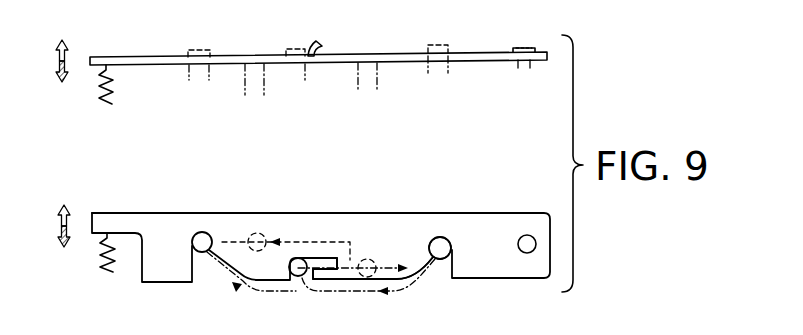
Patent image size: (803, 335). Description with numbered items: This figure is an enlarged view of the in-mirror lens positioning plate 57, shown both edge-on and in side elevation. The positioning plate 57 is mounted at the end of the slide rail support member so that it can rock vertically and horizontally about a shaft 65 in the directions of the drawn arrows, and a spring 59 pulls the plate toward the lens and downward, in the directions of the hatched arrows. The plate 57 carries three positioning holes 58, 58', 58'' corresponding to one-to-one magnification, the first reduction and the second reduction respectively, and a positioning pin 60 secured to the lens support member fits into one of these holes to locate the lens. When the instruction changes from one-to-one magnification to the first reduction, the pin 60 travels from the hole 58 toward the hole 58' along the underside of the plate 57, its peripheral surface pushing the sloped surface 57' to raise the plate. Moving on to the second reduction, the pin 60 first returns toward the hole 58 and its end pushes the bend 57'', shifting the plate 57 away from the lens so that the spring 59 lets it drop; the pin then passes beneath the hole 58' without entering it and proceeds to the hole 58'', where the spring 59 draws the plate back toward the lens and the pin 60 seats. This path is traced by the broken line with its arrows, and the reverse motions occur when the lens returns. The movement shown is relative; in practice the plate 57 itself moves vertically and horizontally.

The positioning plate 57 is at (320, 153).
The sloped surface 57' is at (402, 250).
The bend 57'' is at (337, 163).
The positioning hole 58 is at (457, 185).
The positioning hole 58' is at (303, 191).
The positioning hole 58'' is at (280, 182).
The spring 59 is at (110, 100).
The positioning pin 60 is at (438, 41).
The shaft 65 is at (525, 47).